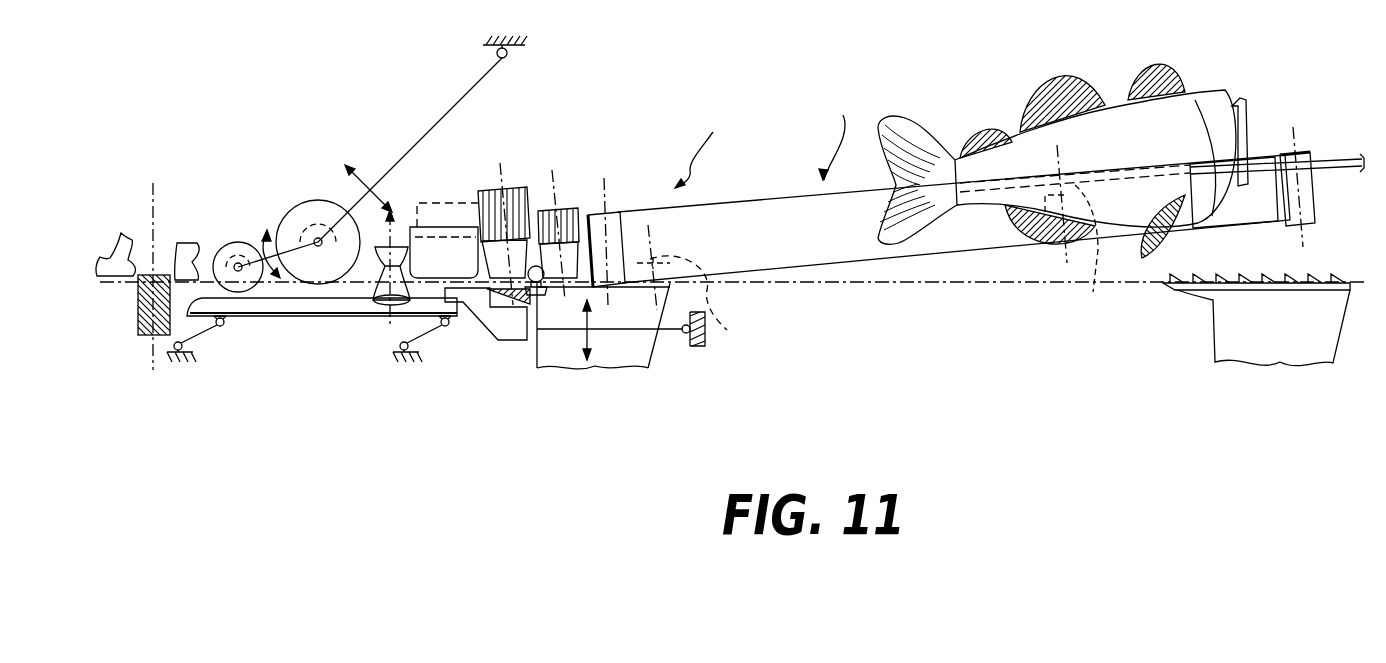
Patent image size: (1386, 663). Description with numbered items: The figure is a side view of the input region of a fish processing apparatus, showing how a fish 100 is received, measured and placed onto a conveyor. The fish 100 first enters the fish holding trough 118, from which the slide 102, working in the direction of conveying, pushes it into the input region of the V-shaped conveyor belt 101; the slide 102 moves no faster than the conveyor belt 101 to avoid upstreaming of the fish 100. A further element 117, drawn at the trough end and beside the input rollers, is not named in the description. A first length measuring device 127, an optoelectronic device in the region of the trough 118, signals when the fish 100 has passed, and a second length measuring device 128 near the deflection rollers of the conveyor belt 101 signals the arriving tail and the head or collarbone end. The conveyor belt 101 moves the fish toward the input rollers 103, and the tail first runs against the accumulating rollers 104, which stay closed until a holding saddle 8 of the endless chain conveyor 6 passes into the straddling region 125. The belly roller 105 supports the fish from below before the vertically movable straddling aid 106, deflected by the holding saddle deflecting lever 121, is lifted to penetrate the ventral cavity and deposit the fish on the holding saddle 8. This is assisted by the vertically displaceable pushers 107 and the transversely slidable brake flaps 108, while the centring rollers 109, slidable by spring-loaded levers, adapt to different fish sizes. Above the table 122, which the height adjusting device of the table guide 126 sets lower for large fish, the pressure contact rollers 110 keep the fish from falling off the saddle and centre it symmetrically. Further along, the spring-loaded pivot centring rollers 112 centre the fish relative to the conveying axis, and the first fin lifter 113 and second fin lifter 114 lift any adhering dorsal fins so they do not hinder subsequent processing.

The endless chain conveyor 6 is at (937, 282).
The holding saddle 8 is at (1230, 335).
The fish 100 is at (1105, 123).
The conveyor belt 101 is at (951, 150).
The slide 102 is at (1243, 117).
The input rollers 103 is at (487, 185).
The accumulating rollers 104 is at (563, 208).
The belly roller 105 is at (540, 290).
The straddling aid 106 is at (498, 330).
The pushers 107 is at (450, 253).
The brake flaps 108 is at (425, 204).
The centring rollers 109 is at (380, 294).
The pressure contact rollers 110 is at (312, 202).
The pivot centring rollers 112 is at (140, 318).
The first fin lifter 113 is at (195, 247).
The second fin lifter 114 is at (122, 235).
The clamping block 117 is at (610, 212).
The fish holding trough 118 is at (1248, 210).
The holding saddle deflecting lever 121 is at (620, 333).
The table 122 is at (293, 318).
The straddling region 125 is at (956, 204).
The table guide 126 is at (200, 340).
The first length measuring device 127 is at (1082, 234).
The second length measuring device 128 is at (707, 301).